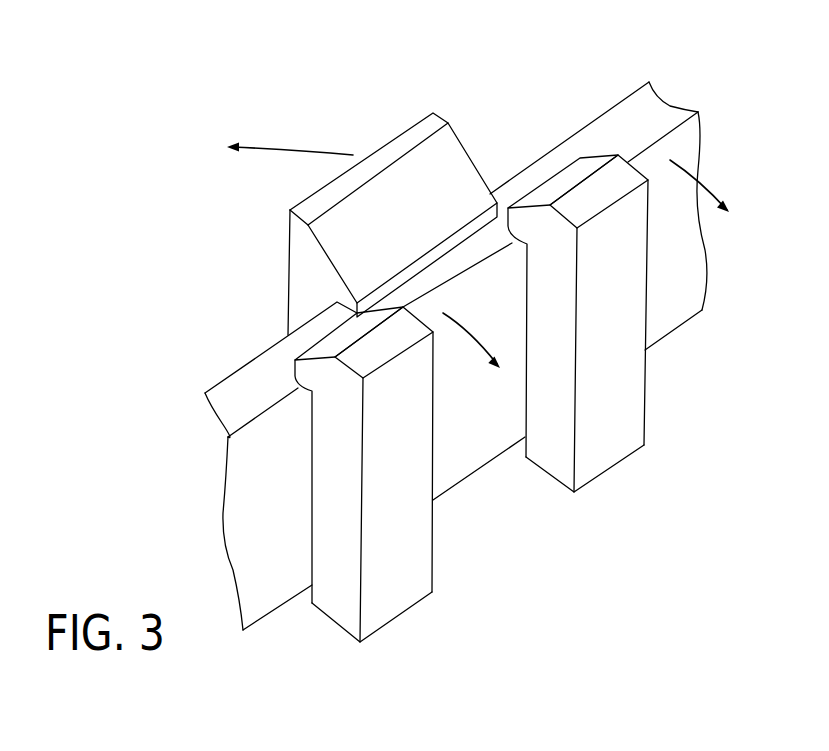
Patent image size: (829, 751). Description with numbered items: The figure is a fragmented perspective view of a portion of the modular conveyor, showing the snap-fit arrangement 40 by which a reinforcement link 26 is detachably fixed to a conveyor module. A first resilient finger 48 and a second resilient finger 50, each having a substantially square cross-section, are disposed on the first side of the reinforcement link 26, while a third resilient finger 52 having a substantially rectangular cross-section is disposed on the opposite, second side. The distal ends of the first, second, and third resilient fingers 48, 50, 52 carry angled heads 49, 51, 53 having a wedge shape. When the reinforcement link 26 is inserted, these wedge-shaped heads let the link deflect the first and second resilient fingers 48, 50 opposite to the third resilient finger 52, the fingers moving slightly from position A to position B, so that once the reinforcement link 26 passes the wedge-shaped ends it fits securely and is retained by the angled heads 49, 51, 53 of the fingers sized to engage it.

The reinforcement link 26 is at (264, 537).
The holder assembly 40 is at (313, 112).
The first resilient finger 48 is at (407, 589).
The angled head 49 is at (305, 352).
The second resilient finger 50 is at (614, 455).
The angled head 51 is at (542, 185).
The third resilient finger 52 is at (445, 193).
The angled head 53 is at (440, 112).